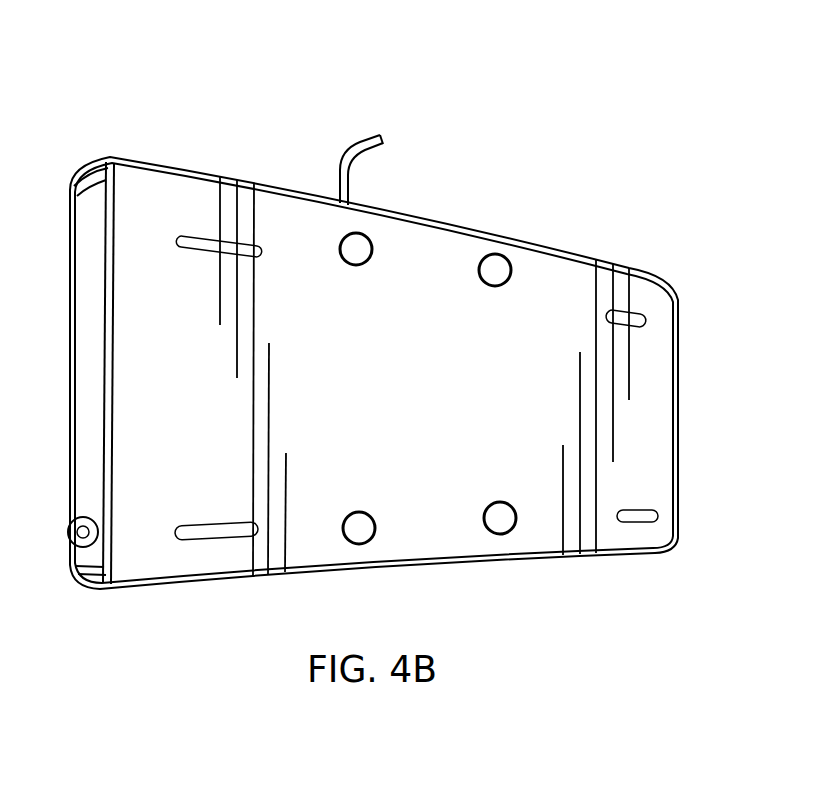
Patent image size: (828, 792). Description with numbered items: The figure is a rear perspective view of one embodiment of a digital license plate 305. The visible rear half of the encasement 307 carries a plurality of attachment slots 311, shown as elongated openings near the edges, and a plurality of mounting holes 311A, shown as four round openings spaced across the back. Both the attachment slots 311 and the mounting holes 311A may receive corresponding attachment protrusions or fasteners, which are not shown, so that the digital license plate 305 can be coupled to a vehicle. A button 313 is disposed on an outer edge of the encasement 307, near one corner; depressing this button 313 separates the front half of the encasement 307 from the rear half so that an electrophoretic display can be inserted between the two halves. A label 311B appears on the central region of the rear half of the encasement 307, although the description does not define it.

The digital license plate 305 is at (370, 324).
The encasement 307 is at (390, 362).
The attachment slots 311 is at (246, 246).
The mounting holes 311A is at (368, 237).
The back panel 311B is at (424, 377).
The button 313 is at (75, 514).